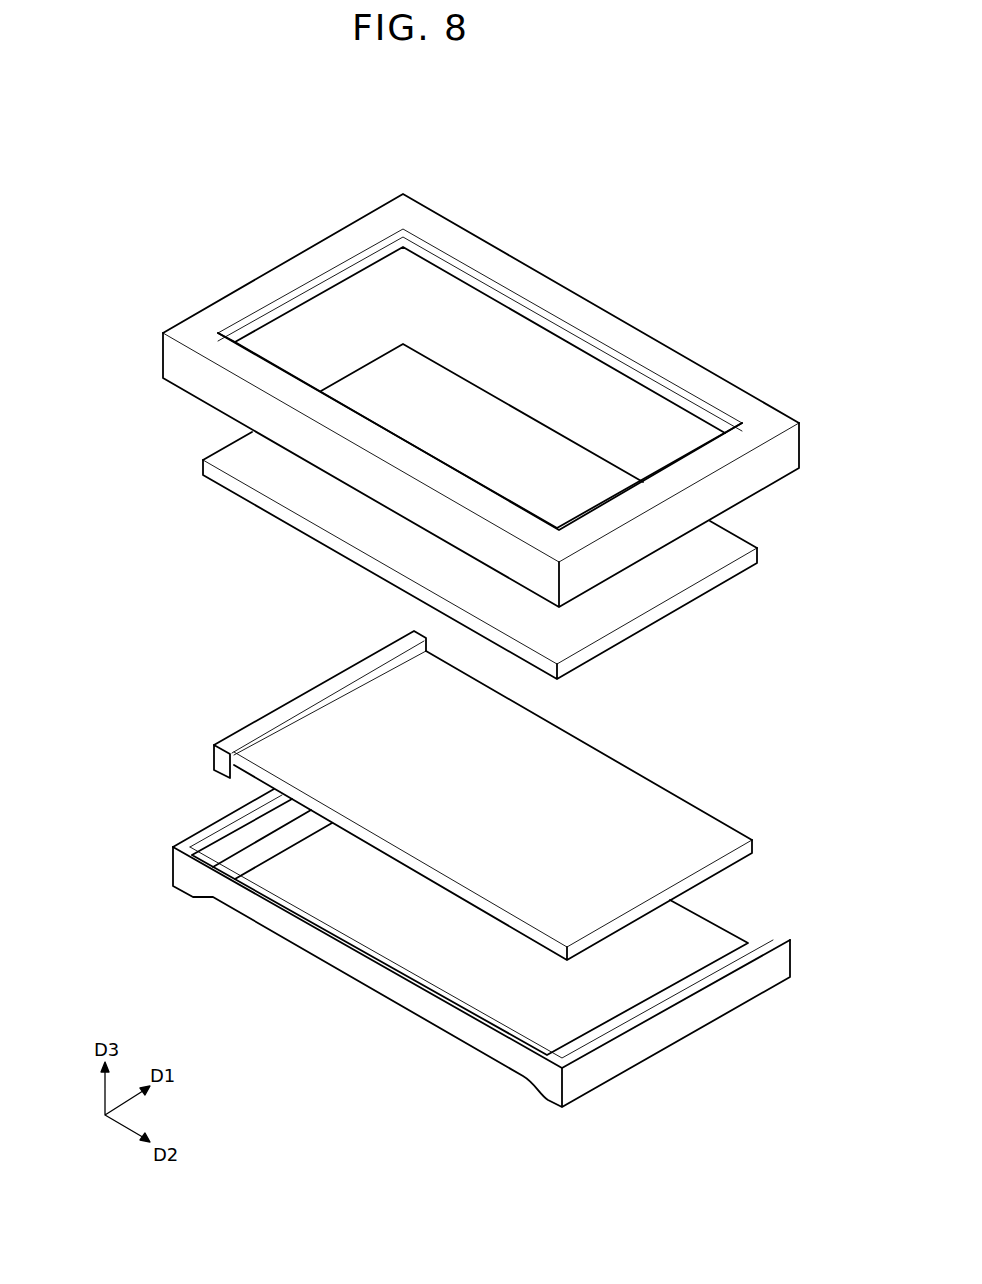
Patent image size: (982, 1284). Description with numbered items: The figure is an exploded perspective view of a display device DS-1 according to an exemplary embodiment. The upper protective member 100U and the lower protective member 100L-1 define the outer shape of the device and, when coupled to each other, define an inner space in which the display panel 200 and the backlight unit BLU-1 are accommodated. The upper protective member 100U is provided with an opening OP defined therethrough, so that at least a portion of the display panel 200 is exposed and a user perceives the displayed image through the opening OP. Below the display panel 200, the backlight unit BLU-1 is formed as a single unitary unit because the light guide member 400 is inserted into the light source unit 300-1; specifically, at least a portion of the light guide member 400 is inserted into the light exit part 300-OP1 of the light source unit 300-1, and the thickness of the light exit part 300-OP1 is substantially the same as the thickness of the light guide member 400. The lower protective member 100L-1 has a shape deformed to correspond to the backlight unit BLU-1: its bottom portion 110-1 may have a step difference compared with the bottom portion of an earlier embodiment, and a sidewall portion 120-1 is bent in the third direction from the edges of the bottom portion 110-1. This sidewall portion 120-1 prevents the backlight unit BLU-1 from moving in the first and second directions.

The display device DS-1 is at (697, 203).
The upper protective member 100U is at (667, 357).
The opening OP is at (548, 320).
The display panel 200 is at (753, 557).
The backlight unit BLU-1 is at (108, 750).
The light source unit 300-1 is at (220, 757).
The light exit part 300-OP1 is at (260, 735).
The light guide member 400 is at (251, 773).
The lower protective member 100L-1 is at (816, 1062).
The bottom portion 110-1 is at (603, 1005).
The sidewall portion 120-1 is at (713, 1002).